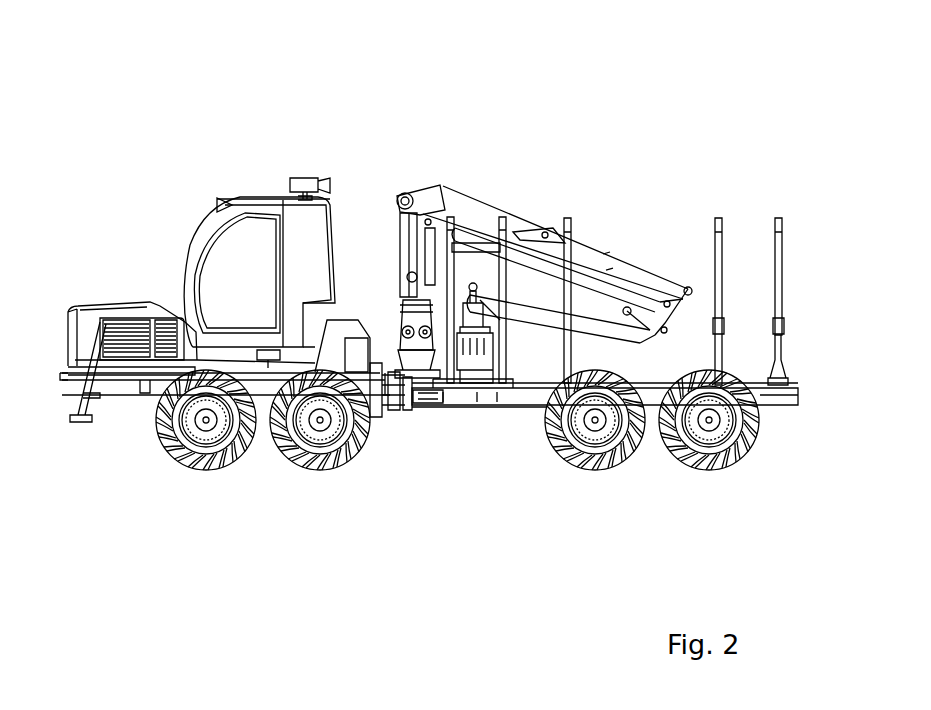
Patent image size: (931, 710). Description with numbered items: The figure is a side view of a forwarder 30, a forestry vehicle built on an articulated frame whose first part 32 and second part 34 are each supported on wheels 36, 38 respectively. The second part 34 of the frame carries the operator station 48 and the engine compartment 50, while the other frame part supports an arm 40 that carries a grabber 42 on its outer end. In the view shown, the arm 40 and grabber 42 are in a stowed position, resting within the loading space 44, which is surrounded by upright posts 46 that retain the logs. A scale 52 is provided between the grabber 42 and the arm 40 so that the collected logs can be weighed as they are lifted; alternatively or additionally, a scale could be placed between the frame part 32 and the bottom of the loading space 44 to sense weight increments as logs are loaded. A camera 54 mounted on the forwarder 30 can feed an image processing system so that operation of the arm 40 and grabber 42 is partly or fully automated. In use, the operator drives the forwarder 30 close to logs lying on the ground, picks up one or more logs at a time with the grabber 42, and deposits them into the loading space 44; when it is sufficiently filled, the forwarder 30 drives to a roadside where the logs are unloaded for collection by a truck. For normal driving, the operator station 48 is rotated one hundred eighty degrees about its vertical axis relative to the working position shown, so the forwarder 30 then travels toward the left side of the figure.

The forwarder 30 is at (418, 152).
The first part of the frame 32 is at (520, 410).
The second part of the frame 34 is at (262, 368).
The wheels 36 is at (700, 470).
The wheels 38 is at (202, 473).
The arm 40 is at (497, 213).
The grabber 42 is at (470, 407).
The loading space 44 is at (701, 273).
The posts 46 is at (780, 270).
The operator station 48 is at (275, 203).
The engine compartment 50 is at (102, 303).
The scale 52 is at (448, 410).
The camera 54 is at (308, 178).